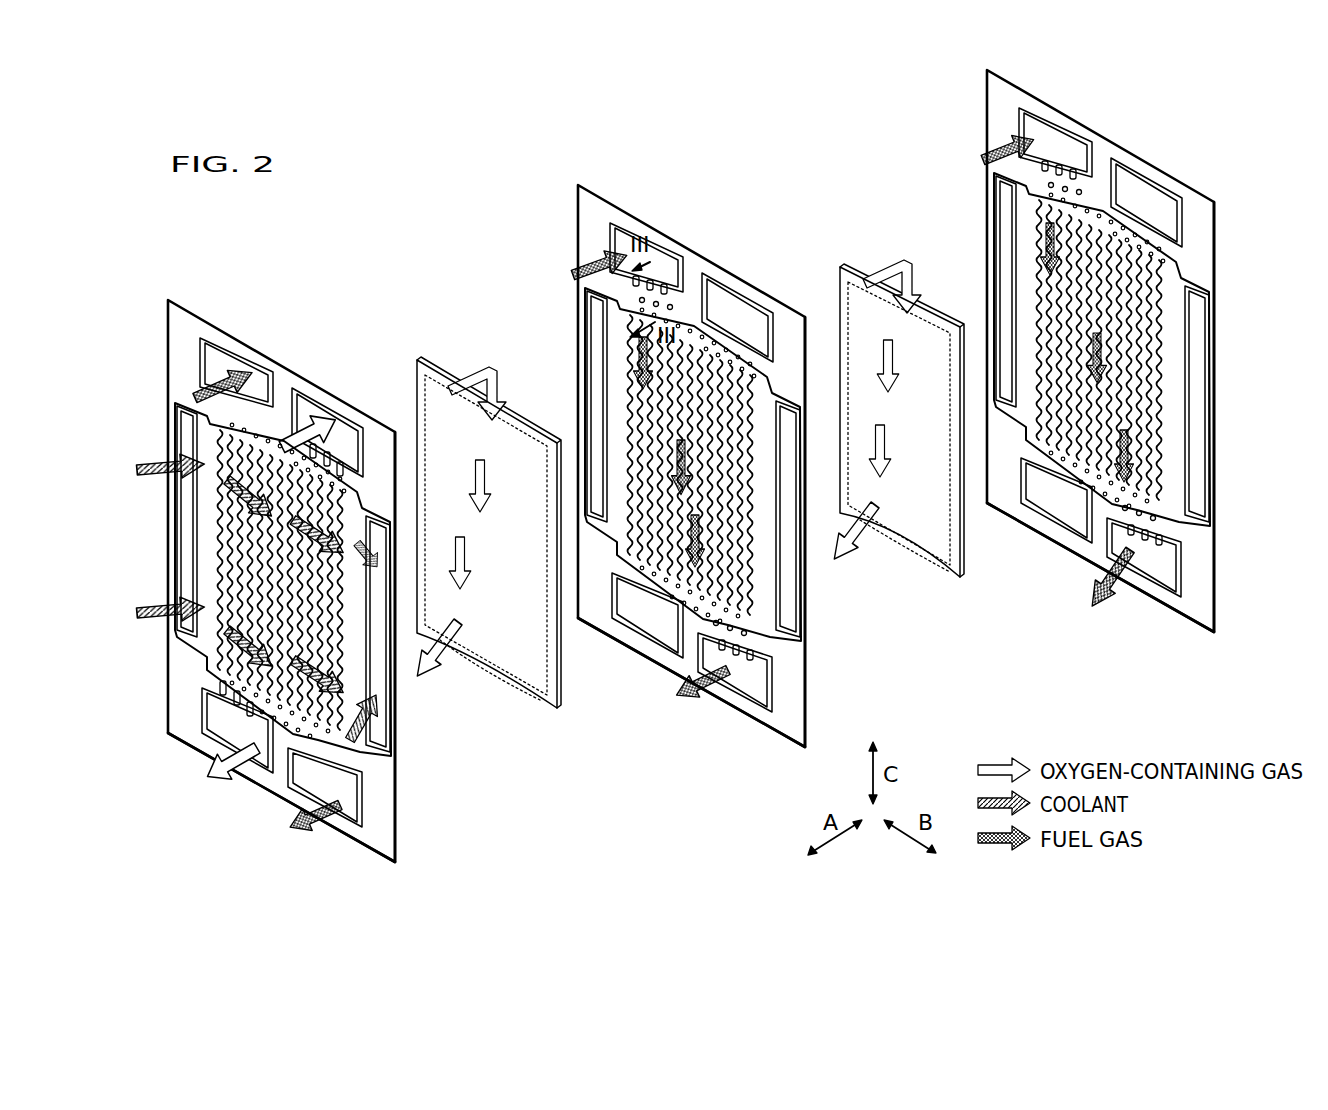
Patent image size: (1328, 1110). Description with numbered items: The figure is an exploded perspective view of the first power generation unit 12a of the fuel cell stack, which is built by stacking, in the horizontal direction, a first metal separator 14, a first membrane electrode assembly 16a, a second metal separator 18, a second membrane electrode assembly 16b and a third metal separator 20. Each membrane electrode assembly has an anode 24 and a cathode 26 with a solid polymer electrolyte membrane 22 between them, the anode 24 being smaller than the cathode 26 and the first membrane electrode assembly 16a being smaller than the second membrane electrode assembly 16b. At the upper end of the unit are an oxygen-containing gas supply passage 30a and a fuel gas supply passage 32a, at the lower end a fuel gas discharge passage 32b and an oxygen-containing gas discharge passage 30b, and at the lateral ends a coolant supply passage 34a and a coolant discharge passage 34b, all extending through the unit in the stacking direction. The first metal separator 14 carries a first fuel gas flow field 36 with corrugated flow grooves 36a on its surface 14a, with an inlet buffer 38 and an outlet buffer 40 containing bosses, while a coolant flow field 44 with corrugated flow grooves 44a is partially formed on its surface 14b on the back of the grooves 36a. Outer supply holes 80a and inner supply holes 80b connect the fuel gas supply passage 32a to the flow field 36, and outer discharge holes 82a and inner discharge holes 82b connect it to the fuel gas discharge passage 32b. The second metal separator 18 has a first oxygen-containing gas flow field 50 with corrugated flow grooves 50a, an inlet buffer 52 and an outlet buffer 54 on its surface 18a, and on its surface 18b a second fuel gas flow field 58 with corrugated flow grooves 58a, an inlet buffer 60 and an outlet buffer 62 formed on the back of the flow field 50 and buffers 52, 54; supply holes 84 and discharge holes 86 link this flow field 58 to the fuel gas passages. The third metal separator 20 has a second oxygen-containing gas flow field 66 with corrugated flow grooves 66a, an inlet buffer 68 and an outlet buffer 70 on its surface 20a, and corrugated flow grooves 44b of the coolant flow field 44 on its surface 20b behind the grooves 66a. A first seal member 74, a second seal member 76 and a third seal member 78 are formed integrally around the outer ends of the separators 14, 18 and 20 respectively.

The first power generation unit 12a is at (304, 234).
The first metal separator 14 is at (1217, 197).
The surface of first metal separator 14a is at (1160, 592).
The surface of first metal separator 14b is at (1185, 607).
The first membrane electrode assembly 16a is at (838, 265).
The second membrane electrode assembly 16b is at (415, 357).
The second metal separator 18 is at (576, 184).
The surface of second metal separator 18a is at (767, 733).
The surface of second metal separator 18b is at (751, 708).
The third metal separator 20 is at (165, 298).
The surface of third metal separator 20a is at (387, 817).
The surface of third metal separator 20b is at (341, 826).
The solid polymer electrolyte membrane 22 is at (562, 673).
The anode 24 is at (510, 575).
The cathode 26 is at (475, 677).
The oxygen-containing gas supply passage 30a is at (312, 407).
The oxygen-containing gas discharge passage 30b is at (217, 723).
The fuel gas supply passage 32a is at (228, 366).
The fuel gas discharge passage 32b is at (303, 783).
The coolant supply passage 34a is at (185, 504).
The coolant discharge passage 34b is at (382, 740).
The first fuel gas flow field 36 is at (1153, 340).
The corrugated flow grooves 36a is at (1040, 370).
The inlet buffer 38 is at (1130, 233).
The outlet buffer 40 is at (1092, 490).
The coolant flow field 44 is at (1198, 354).
The corrugated flow grooves 44a is at (1033, 395).
The corrugated flow grooves 44b is at (240, 556).
The first oxygen-containing gas flow field 50 is at (782, 468).
The corrugated flow grooves 50a is at (623, 510).
The inlet buffer 52 is at (737, 302).
The outlet buffer 54 is at (646, 648).
The second fuel gas flow field 58 is at (735, 462).
The corrugated flow grooves 58a is at (633, 490).
The inlet buffer 60 is at (720, 350).
The outlet buffer 62 is at (680, 596).
The second oxygen-containing gas flow field 66 is at (345, 650).
The corrugated flow grooves 66a is at (210, 583).
The inlet buffer 68 is at (273, 412).
The outlet buffer 70 is at (226, 786).
The first seal member 74 is at (994, 223).
The second seal member 76 is at (586, 319).
The third seal member 78 is at (178, 436).
The outer supply holes 80a is at (1058, 160).
The inner supply holes 80b is at (1040, 183).
The outer discharge holes 82a is at (1177, 533).
The inner discharge holes 82b is at (1157, 517).
The supply holes 84 is at (674, 308).
The discharge holes 86 is at (742, 633).